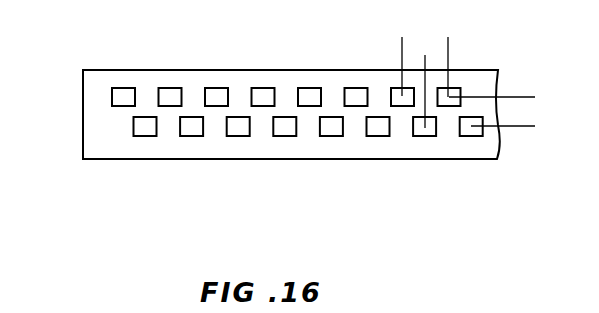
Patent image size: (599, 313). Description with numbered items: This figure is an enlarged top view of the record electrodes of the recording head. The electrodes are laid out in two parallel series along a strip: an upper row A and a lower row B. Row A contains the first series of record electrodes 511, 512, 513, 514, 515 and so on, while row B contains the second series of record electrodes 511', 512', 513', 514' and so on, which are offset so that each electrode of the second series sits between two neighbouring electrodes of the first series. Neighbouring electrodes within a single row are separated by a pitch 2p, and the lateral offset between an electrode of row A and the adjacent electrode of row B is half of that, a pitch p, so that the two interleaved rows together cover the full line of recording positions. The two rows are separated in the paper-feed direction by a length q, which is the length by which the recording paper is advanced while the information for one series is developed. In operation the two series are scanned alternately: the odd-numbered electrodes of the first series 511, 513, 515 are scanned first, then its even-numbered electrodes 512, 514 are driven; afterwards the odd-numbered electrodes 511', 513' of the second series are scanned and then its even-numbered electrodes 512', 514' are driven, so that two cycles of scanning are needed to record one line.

The record electrode 511 is at (121, 70).
The record electrode 512 is at (175, 70).
The record electrode 513 is at (227, 70).
The record electrode 514 is at (280, 70).
The record electrode 515 is at (308, 100).
The record electrode 511' is at (136, 161).
The record electrode 512' is at (187, 161).
The record electrode 513' is at (242, 161).
The record electrode 514' is at (293, 161).
The row A is at (112, 97).
The row B is at (133, 133).
The pitch 2p is at (468, 40).
The pitch p is at (410, 59).
The length q is at (530, 77).